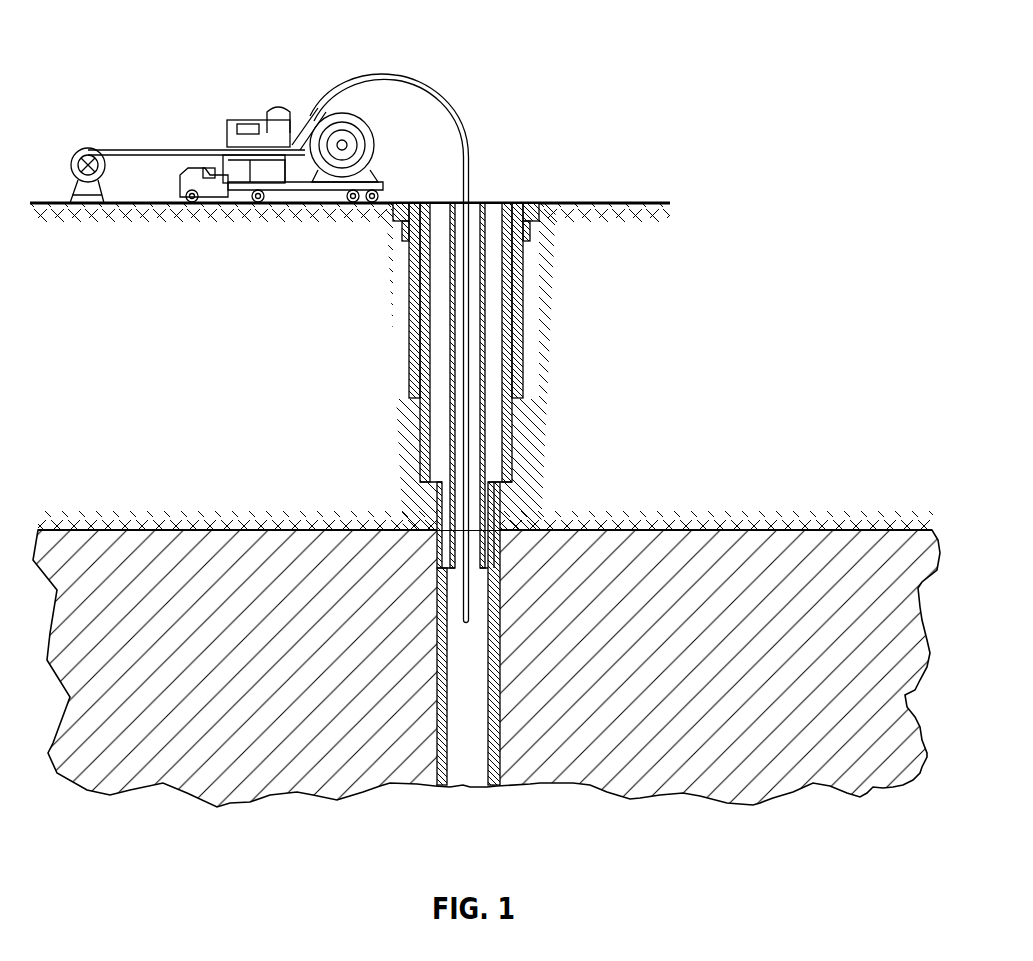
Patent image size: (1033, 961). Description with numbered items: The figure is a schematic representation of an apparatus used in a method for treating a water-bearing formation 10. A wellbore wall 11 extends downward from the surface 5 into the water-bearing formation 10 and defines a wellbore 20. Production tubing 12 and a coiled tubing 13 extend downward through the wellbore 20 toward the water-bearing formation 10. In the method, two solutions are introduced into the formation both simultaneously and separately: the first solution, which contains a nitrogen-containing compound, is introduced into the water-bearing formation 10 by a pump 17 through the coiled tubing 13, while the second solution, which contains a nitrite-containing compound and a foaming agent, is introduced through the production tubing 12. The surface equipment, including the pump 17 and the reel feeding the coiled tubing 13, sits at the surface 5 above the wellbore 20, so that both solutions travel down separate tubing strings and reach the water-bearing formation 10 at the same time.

The surface 5 is at (642, 203).
The water-bearing formation 10 is at (735, 615).
The wellbore wall 11 is at (517, 456).
The production tubing 12 is at (492, 303).
The coiled tubing 13 is at (343, 110).
The pump 17 is at (65, 165).
The wellbore 20 is at (481, 766).